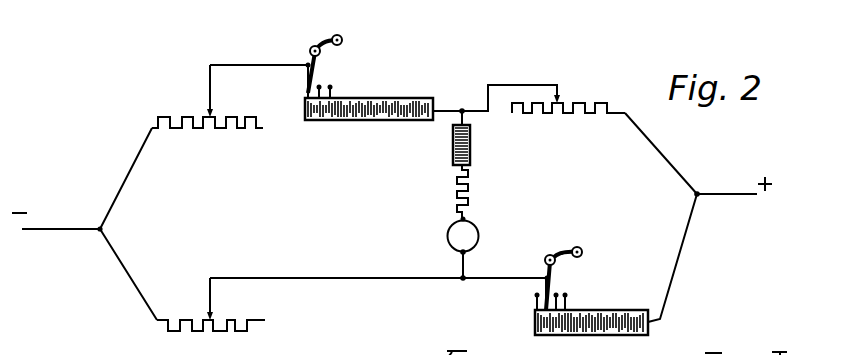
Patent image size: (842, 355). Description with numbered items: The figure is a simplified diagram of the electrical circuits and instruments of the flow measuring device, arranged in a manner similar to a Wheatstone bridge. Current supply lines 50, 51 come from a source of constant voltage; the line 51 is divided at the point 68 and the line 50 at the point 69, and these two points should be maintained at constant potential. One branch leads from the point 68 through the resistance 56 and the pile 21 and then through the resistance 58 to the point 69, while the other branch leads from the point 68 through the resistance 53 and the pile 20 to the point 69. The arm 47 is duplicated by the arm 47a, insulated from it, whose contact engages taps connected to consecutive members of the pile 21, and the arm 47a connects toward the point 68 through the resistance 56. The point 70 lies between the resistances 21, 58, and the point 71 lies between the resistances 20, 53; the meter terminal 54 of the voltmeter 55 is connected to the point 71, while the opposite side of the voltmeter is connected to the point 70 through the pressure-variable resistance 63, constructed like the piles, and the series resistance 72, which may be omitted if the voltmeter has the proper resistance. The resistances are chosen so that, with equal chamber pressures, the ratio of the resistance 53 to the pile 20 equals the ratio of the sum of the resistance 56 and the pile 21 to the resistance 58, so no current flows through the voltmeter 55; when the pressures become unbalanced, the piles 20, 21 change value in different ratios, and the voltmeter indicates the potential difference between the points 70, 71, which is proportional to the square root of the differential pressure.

The current supply line 51 is at (54, 226).
The point 68 is at (104, 227).
The resistance 56 is at (176, 108).
The resistance 53 is at (211, 335).
The arm 47a is at (313, 76).
The pile 21 is at (382, 92).
The point 70 is at (462, 108).
The pressure-variable resistance 63 is at (470, 140).
The resistance 72 is at (458, 193).
The voltmeter 55 is at (479, 238).
The meter terminal 54 is at (466, 254).
The point 71 is at (377, 297).
The arm 47 is at (560, 271).
The pile 20 is at (592, 306).
The point 69 is at (662, 217).
The current supply line 50 is at (723, 194).
The resistance 58 is at (568, 120).